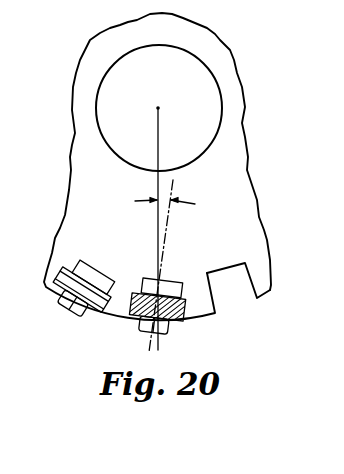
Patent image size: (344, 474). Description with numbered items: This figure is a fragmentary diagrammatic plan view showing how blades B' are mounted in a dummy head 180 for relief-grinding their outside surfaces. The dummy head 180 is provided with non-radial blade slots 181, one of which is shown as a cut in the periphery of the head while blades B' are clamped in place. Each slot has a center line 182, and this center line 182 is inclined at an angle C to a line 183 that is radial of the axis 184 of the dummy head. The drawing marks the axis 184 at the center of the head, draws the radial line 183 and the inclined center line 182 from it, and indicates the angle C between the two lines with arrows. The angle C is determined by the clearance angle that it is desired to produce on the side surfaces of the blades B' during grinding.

The dummy head 180 is at (252, 202).
The non-radial blade slot 181 is at (227, 290).
The center line of slot 182 is at (168, 246).
The radial line 183 is at (157, 226).
The axis of dummy head 184 is at (158, 108).
The blades B' is at (125, 305).
The angle C is at (167, 193).